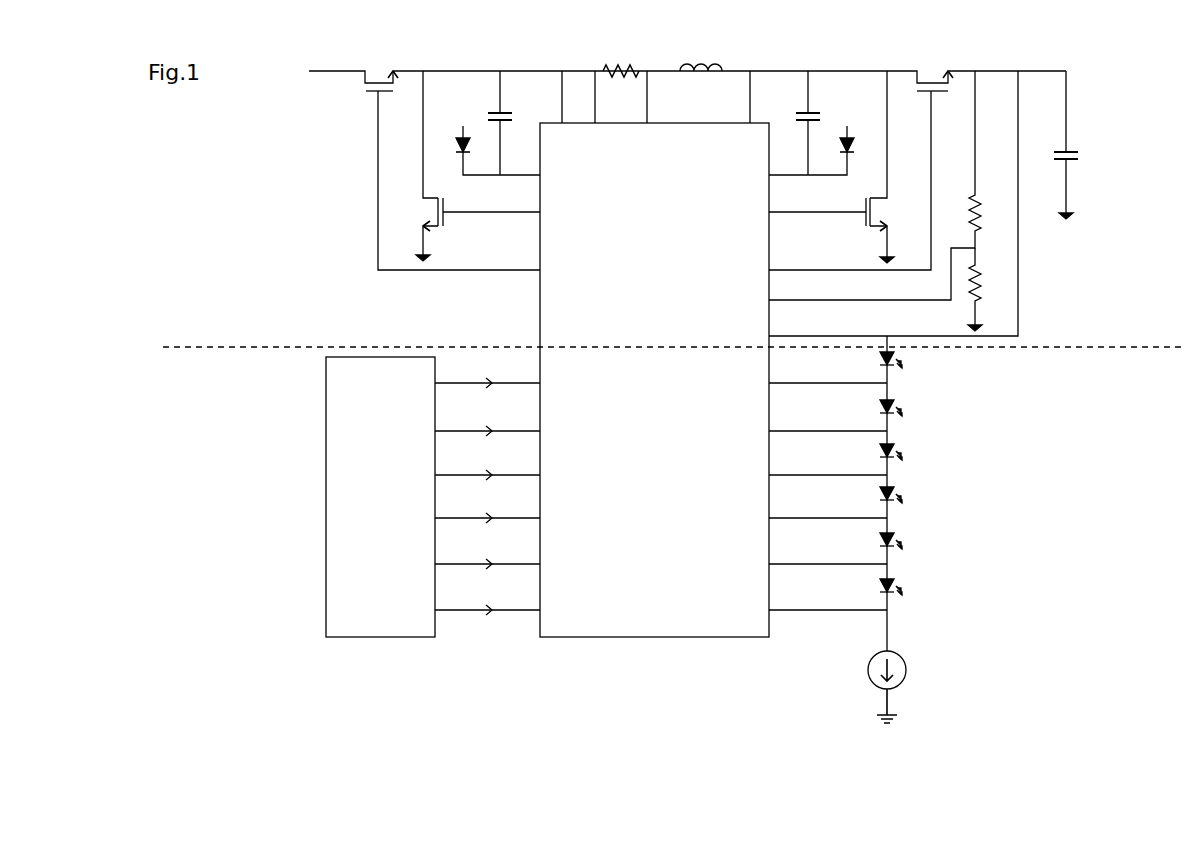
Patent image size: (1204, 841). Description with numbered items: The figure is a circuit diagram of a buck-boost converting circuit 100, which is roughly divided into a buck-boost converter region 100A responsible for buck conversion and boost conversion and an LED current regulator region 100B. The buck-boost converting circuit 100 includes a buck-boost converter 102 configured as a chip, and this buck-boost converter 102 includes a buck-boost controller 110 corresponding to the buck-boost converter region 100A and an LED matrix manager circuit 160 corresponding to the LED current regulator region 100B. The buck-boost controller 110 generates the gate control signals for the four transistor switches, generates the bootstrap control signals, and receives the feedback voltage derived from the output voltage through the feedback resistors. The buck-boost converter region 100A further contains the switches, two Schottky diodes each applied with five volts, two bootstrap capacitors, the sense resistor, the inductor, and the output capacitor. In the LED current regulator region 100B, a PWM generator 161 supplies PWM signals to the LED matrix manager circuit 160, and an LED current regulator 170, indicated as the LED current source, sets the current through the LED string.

The buck-boost converting circuit 100 is at (1176, 104).
The buck-boost converter region 100A is at (205, 312).
The LED current regulator region 100B is at (205, 472).
The buck-boost converter 102 is at (540, 320).
The buck-boost controller 110 is at (654, 380).
The LED matrix manager circuit 160 is at (727, 493).
The pulse width modulation (PWM) generator 161 is at (433, 497).
The LED current regulator 170 is at (913, 665).